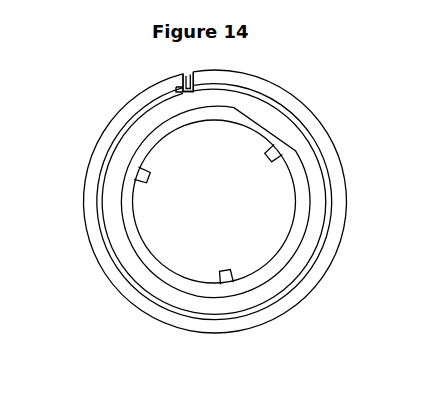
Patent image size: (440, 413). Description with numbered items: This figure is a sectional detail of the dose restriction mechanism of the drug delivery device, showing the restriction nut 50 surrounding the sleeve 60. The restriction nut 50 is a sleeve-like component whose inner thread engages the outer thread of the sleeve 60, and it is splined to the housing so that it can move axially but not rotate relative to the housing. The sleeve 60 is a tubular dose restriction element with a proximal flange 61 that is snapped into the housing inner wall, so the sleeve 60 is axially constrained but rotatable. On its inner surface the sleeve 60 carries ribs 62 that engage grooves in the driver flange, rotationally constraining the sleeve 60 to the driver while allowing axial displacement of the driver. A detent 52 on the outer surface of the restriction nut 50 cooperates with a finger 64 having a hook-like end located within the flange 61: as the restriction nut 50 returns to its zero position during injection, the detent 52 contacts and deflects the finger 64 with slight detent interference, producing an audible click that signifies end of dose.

The restriction nut 50 is at (310, 153).
The detent 52 is at (177, 93).
The sleeve 60 is at (158, 273).
The proximal flange 61 is at (290, 98).
The ribs 62 is at (142, 174).
The finger 64 is at (167, 85).